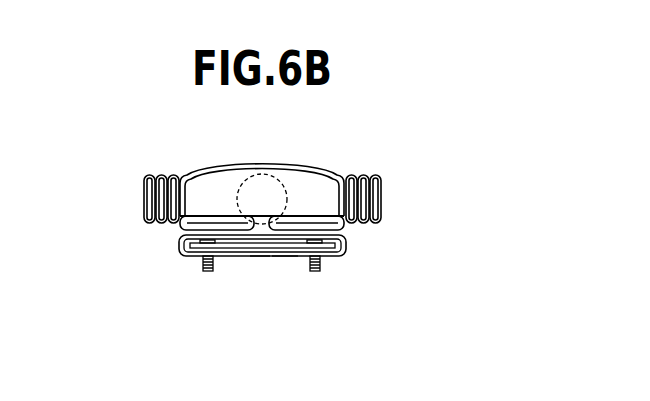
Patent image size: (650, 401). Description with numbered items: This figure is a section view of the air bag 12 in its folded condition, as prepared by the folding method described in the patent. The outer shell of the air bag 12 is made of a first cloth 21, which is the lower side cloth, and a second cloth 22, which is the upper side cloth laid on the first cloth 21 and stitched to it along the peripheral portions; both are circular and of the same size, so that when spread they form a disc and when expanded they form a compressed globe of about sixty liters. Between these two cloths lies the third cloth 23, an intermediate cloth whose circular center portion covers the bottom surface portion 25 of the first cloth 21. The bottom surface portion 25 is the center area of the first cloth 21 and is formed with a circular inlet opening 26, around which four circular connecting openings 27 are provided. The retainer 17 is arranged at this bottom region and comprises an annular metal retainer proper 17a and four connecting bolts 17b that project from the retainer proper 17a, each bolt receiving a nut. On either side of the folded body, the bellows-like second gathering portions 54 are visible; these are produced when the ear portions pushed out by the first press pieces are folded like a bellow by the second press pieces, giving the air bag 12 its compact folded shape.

The air bag 12 is at (323, 152).
The second cloth 22 is at (263, 163).
The third cloth 23 is at (293, 223).
The second gathering portions 54 is at (141, 199).
The first cloth 21 is at (348, 243).
The bottom surface portion 25 is at (324, 256).
The retainer 17 is at (241, 258).
The retainer proper 17a is at (286, 258).
The connecting bolts 17b is at (199, 268).
The inlet opening 26 is at (261, 258).
The connecting openings 27 is at (325, 263).